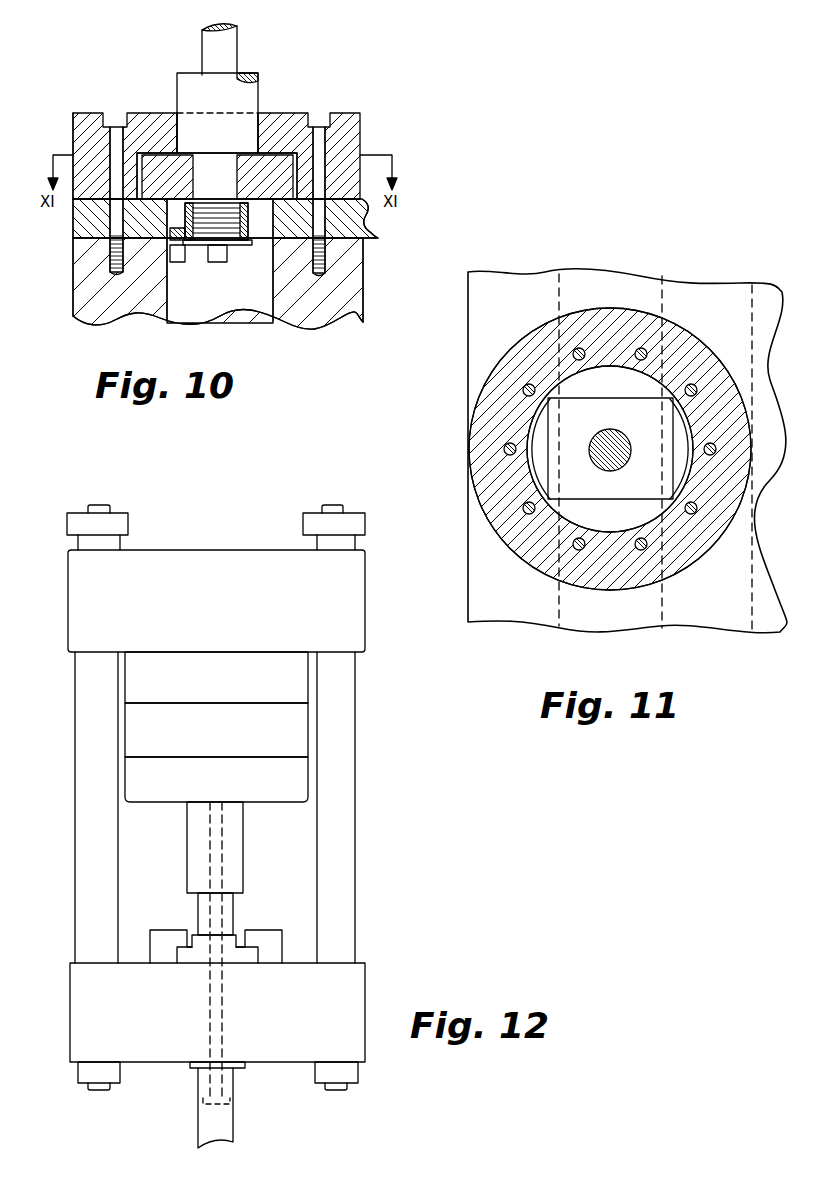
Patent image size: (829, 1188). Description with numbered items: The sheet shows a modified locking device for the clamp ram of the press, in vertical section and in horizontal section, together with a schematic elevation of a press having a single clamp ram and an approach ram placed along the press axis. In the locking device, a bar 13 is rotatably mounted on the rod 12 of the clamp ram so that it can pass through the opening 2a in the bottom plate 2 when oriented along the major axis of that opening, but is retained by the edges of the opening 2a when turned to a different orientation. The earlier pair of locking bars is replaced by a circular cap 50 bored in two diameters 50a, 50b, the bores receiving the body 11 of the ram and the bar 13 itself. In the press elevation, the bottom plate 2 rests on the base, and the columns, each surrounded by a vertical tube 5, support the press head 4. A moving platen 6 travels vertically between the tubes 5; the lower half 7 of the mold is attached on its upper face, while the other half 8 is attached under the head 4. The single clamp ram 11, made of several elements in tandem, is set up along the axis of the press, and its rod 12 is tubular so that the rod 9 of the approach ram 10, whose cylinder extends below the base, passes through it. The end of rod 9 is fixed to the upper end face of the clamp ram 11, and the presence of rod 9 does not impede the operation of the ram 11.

In FIG. 10, the bottom plate 2 is at (72, 243).
In FIG. 11, the bottom plate 2 is at (506, 283).
In FIG. 12, the bottom plate 2 is at (345, 997).
In FIG. 10, the opening 2a is at (161, 218).
In FIG. 11, the opening 2a is at (565, 504).
In FIG. 12, the press head 4 is at (80, 610).
In FIG. 12, the vertical tube 5 is at (90, 755).
In FIG. 12, the moving platen 6 is at (290, 780).
In FIG. 12, the lower half of the mold 7 is at (290, 726).
In FIG. 12, the upper half of the mold 8 is at (290, 682).
In FIG. 12, the rod of the approach ram 9 is at (215, 912).
In FIG. 12, the approach ram cylinder 10 is at (232, 1112).
In FIG. 10, the clamp ram body 11 is at (249, 103).
In FIG. 12, the clamp ram body 11 is at (231, 852).
In FIG. 10, the ram rod 12 is at (228, 178).
In FIG. 12, the ram rod 12 is at (195, 912).
In FIG. 10, the bar 13 is at (281, 181).
In FIG. 11, the bar 13 is at (545, 440).
In FIG. 10, the circular cap 50 is at (95, 113).
In FIG. 11, the circular cap 50 is at (684, 348).
In FIG. 10, the first bore diameter 50a is at (173, 132).
In FIG. 10, the second bore diameter 50b is at (98, 200).
In FIG. 11, the second bore diameter 50b is at (578, 377).